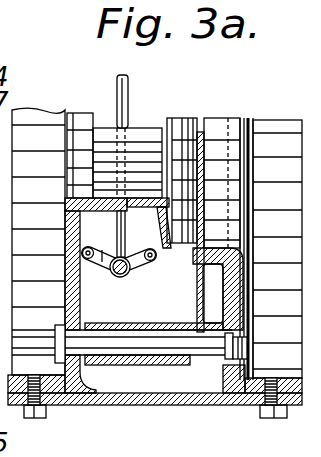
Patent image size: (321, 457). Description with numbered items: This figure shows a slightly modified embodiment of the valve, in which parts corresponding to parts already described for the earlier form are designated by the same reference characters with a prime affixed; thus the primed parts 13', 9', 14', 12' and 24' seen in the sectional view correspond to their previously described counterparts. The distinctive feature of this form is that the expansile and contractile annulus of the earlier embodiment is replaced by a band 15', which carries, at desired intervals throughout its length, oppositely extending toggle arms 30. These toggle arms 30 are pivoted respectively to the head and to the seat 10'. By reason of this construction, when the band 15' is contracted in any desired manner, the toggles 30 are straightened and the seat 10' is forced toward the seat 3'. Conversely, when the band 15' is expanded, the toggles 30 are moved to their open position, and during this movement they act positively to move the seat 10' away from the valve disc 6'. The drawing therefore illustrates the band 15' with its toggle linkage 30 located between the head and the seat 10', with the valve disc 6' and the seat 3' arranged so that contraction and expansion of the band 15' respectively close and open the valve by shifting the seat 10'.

The outer tube 13' is at (38, 241).
The band 15' is at (139, 187).
The valve disc 6' is at (222, 211).
The cavity 9' is at (152, 226).
The toggle arms 30 is at (178, 292).
The seat 10' is at (125, 295).
The seat 3' is at (219, 320).
The shaft 14' is at (129, 357).
The bearing 12' is at (146, 374).
The base plate 24' is at (155, 406).